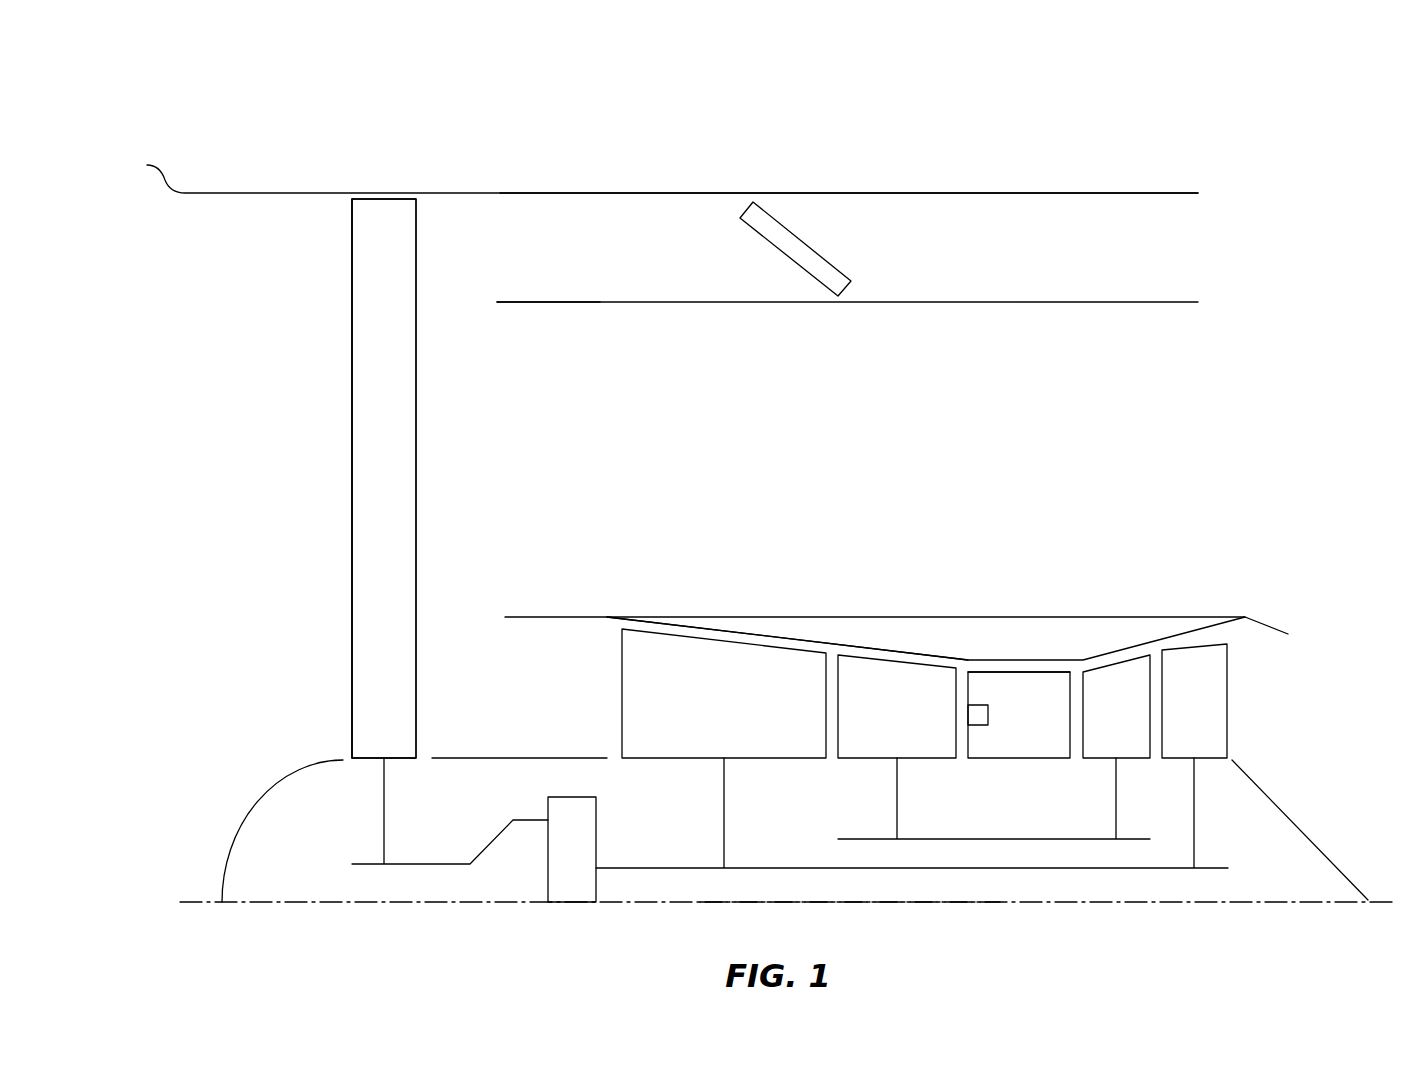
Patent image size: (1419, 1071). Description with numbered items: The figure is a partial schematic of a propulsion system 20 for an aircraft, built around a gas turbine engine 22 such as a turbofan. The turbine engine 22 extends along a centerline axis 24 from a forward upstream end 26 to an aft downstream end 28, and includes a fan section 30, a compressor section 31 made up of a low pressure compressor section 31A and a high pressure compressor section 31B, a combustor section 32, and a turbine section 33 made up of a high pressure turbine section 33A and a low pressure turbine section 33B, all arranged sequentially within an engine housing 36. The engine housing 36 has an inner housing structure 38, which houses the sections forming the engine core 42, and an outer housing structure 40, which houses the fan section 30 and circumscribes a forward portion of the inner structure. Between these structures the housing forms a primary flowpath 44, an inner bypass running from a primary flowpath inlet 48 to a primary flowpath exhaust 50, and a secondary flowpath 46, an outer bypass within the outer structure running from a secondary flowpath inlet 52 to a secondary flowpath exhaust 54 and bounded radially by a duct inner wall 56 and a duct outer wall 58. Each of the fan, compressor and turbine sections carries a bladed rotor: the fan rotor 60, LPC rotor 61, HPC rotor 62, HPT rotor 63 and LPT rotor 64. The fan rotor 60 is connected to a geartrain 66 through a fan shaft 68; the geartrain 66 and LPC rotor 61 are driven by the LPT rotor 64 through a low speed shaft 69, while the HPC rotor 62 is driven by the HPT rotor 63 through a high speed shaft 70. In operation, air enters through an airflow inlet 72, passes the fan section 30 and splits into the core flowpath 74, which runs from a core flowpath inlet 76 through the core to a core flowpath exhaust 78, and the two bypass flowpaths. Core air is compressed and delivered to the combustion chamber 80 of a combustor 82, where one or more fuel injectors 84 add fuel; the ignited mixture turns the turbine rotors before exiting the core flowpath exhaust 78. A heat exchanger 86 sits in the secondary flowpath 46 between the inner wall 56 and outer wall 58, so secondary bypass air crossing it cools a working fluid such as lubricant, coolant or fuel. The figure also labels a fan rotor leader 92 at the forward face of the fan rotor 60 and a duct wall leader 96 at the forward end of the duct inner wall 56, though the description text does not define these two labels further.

The propulsion system 20 is at (175, 108).
The gas turbine engine 22 is at (175, 108).
The centerline axis 24 is at (172, 906).
The upstream end 26 is at (656, 173).
The downstream end 28 is at (1370, 896).
The fan section 30 is at (388, 186).
The compressor section 31 is at (956, 530).
The low pressure compressor section 31A is at (622, 587).
The high pressure compressor section 31B is at (838, 587).
The combustor section 32 is at (968, 587).
The turbine section 33 is at (1083, 530).
The high pressure turbine section 33A is at (1148, 587).
The low pressure turbine section 33B is at (1227, 587).
The engine housing 36 is at (645, 138).
The inner housing structure 38 is at (548, 610).
The outer housing structure 40 is at (558, 186).
The core 42 is at (843, 896).
The primary flowpath 44 is at (624, 438).
The secondary flowpath 46 is at (624, 260).
The primary flowpath inlet 48 is at (490, 441).
The primary flowpath exhaust 50 is at (1206, 442).
The secondary flowpath inlet 52 is at (490, 256).
The secondary flowpath exhaust 54 is at (1206, 252).
The duct inner wall 56 is at (925, 300).
The duct outer wall 58 is at (925, 195).
The fan rotor 60 is at (373, 728).
The LPC rotor 61 is at (713, 728).
The HPC rotor 62 is at (886, 728).
The HPT rotor 63 is at (1105, 728).
The LPT rotor 64 is at (1183, 728).
The geartrain 66 is at (561, 860).
The fan shaft 68 is at (418, 866).
The low speed shaft 69 is at (1158, 870).
The high speed shaft 70 is at (1022, 841).
The airflow inlet 72 is at (170, 406).
The core flowpath 74 is at (562, 706).
The core flowpath inlet 76 is at (490, 684).
The core flowpath exhaust 78 is at (1288, 713).
The combustion chamber 80 is at (1008, 728).
The combustor 82 is at (1030, 672).
The fuel injector 84 is at (975, 705).
The heat exchanger 86 is at (808, 243).
The fan blade 92 is at (352, 522).
The bypass duct inlet 96 is at (500, 304).